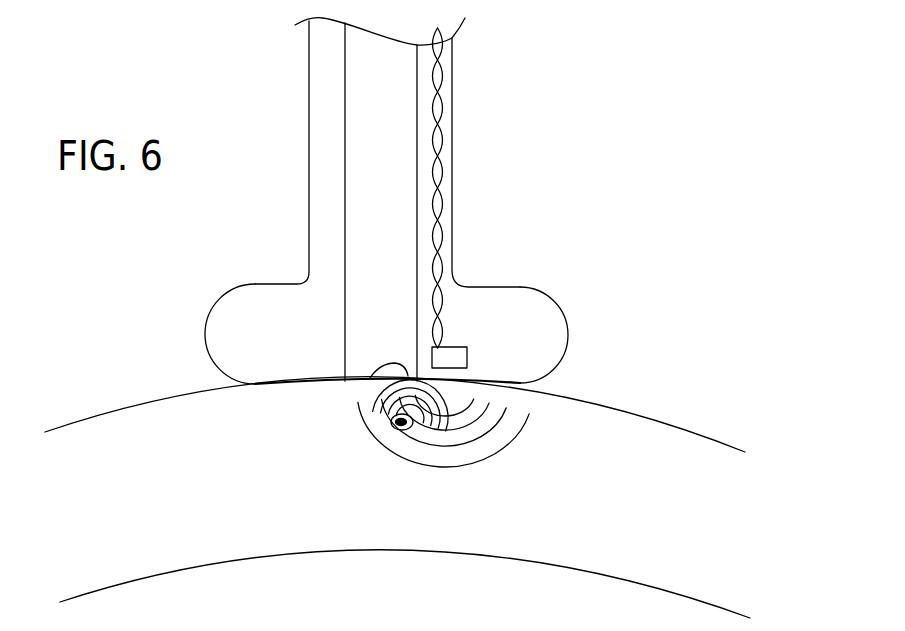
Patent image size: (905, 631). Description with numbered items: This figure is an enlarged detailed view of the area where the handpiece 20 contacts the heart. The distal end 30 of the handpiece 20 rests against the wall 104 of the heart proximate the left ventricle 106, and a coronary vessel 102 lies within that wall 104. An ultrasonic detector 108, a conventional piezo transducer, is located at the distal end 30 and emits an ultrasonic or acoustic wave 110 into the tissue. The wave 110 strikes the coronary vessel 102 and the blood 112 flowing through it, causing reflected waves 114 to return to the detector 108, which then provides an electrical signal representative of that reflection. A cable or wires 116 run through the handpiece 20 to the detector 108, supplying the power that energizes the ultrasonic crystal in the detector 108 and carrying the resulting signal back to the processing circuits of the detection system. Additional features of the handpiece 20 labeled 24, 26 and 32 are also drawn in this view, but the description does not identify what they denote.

The handpiece 20 is at (490, 92).
The housing 24 is at (308, 165).
The channel 26 is at (418, 158).
The distal end 30 is at (243, 283).
The foot 32 is at (553, 393).
The coronary vessel 102 is at (403, 428).
The wall 104 is at (642, 443).
The left ventricle 106 is at (410, 602).
The ultrasonic detector 108 is at (467, 356).
The ultrasonic or acoustic wave 110 is at (500, 455).
The blood 112 is at (390, 425).
The reflected waves 114 is at (368, 378).
The cable or wires 116 is at (437, 188).